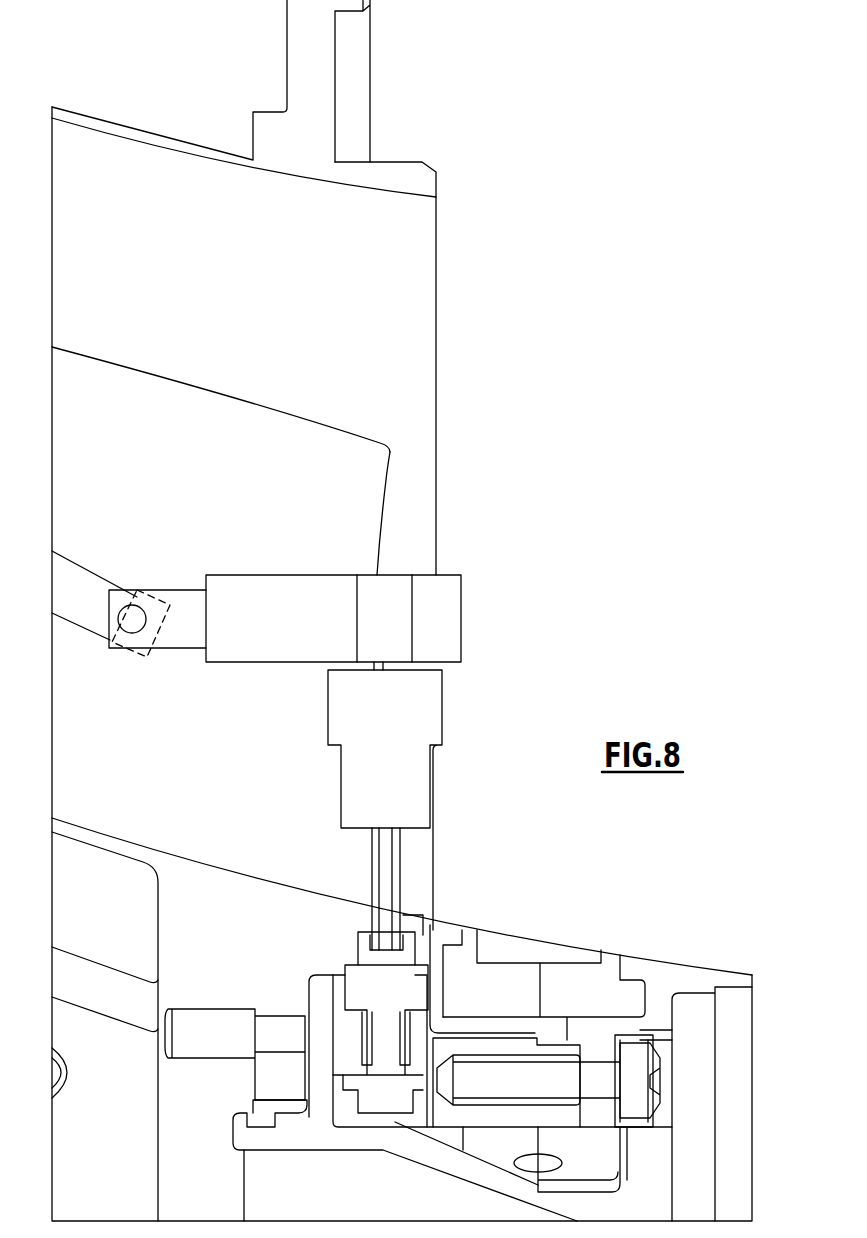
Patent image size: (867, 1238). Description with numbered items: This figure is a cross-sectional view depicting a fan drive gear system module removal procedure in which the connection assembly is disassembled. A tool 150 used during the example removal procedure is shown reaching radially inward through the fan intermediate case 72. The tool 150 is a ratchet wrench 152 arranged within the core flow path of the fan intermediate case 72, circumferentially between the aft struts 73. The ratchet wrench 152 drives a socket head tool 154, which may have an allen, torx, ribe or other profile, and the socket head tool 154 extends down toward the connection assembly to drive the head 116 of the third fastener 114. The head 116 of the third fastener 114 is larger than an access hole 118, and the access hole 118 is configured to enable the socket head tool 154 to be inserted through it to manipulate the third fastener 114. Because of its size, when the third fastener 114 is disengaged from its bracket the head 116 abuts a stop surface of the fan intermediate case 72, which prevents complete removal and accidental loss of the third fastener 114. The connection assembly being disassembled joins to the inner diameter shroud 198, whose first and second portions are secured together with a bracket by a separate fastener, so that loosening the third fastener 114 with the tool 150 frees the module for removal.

The fan intermediate case 72 is at (424, 146).
The aft struts 73 is at (353, 502).
The tool 150 is at (492, 583).
The ratchet wrench 152 is at (183, 610).
The socket head tool 154 is at (386, 889).
The access hole 118 is at (390, 950).
The head 116 is at (370, 958).
The third fastener 114 is at (390, 978).
The inner diameter shroud 198 is at (712, 1043).